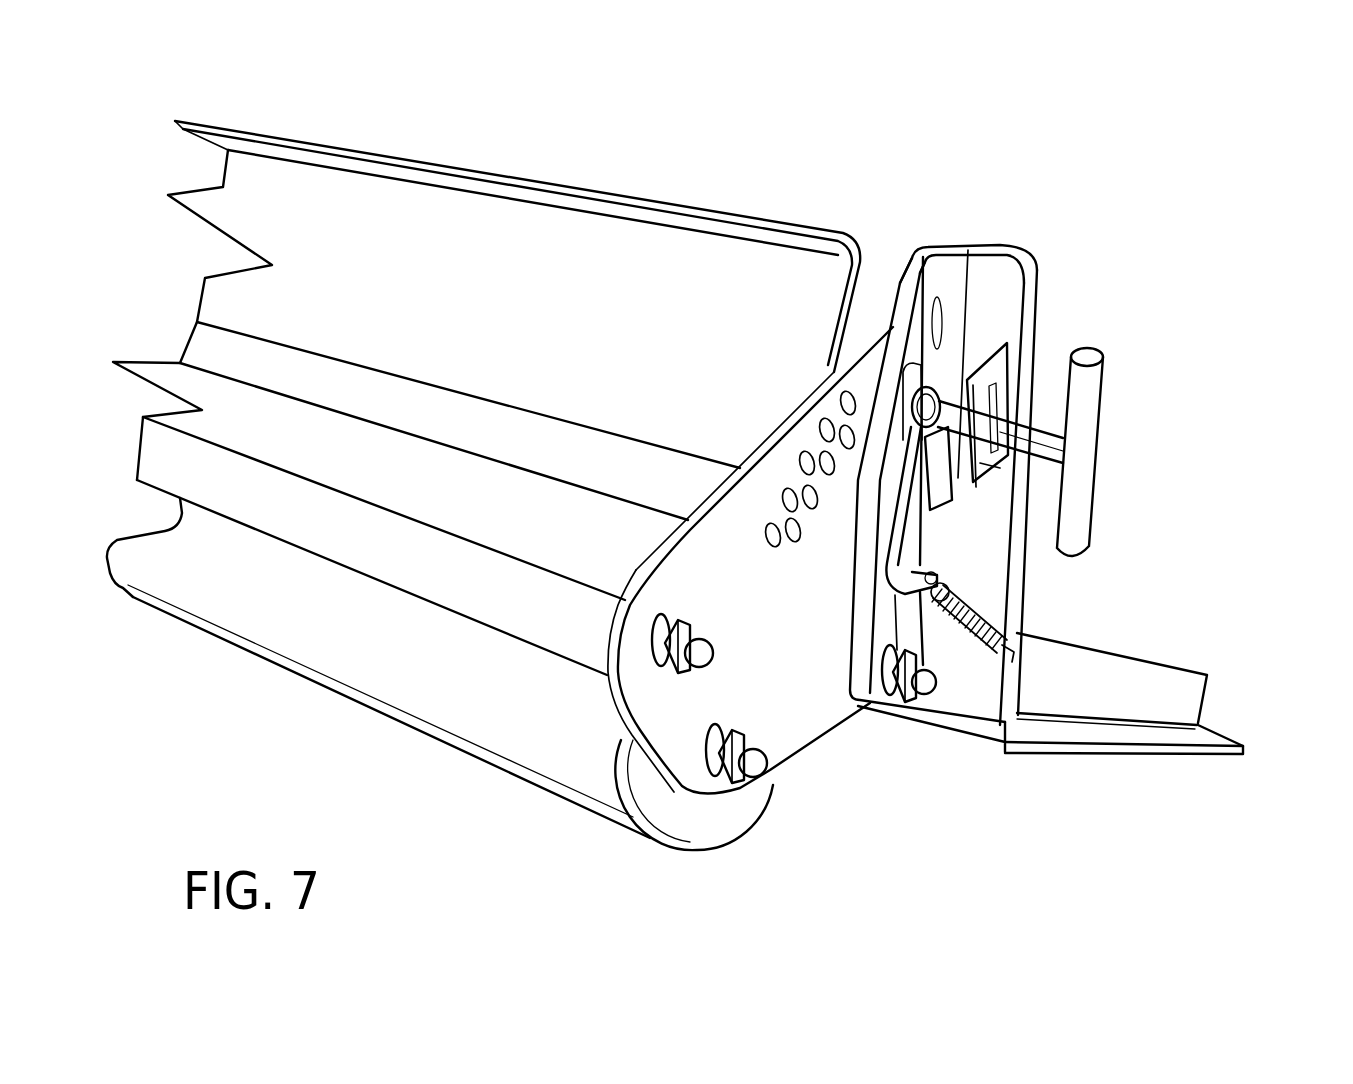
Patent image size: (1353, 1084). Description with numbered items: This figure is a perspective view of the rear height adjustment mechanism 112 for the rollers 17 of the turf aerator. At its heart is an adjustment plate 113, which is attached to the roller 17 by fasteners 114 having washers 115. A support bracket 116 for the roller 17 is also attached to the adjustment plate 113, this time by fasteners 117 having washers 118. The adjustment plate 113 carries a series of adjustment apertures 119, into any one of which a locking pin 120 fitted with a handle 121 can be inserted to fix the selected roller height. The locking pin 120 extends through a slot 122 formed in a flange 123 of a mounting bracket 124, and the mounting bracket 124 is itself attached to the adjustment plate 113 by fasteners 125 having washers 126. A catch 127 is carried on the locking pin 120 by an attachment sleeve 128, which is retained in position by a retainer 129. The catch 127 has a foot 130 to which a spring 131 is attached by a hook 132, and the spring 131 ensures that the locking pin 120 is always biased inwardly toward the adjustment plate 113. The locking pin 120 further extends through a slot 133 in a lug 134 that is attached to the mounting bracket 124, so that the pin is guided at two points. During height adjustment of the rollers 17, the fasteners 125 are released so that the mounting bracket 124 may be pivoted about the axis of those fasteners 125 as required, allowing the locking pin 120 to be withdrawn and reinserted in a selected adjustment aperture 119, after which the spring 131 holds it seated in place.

The roller 17 is at (341, 658).
The rear height adjustment mechanism 112 is at (1117, 450).
The adjustment plate 113 is at (690, 588).
The fasteners 114 is at (760, 780).
The washers 115 is at (727, 745).
The support bracket 116 is at (400, 284).
The fasteners 117 is at (712, 655).
The washers 118 is at (657, 615).
The adjustment apertures 119 is at (790, 497).
The locking pin 120 is at (1003, 440).
The handle 121 is at (1087, 397).
The slot 122 is at (940, 350).
The flange 123 is at (903, 283).
The mounting bracket 124 is at (1000, 280).
The fasteners 125 is at (995, 702).
The washers 126 is at (895, 700).
The catch 127 is at (912, 528).
The attachment sleeve 128 is at (997, 287).
The retainer 129 is at (940, 482).
The foot 130 is at (905, 535).
The spring 131 is at (995, 690).
The hook 132 is at (970, 592).
The slot 133 is at (1000, 395).
The lug 134 is at (985, 465).